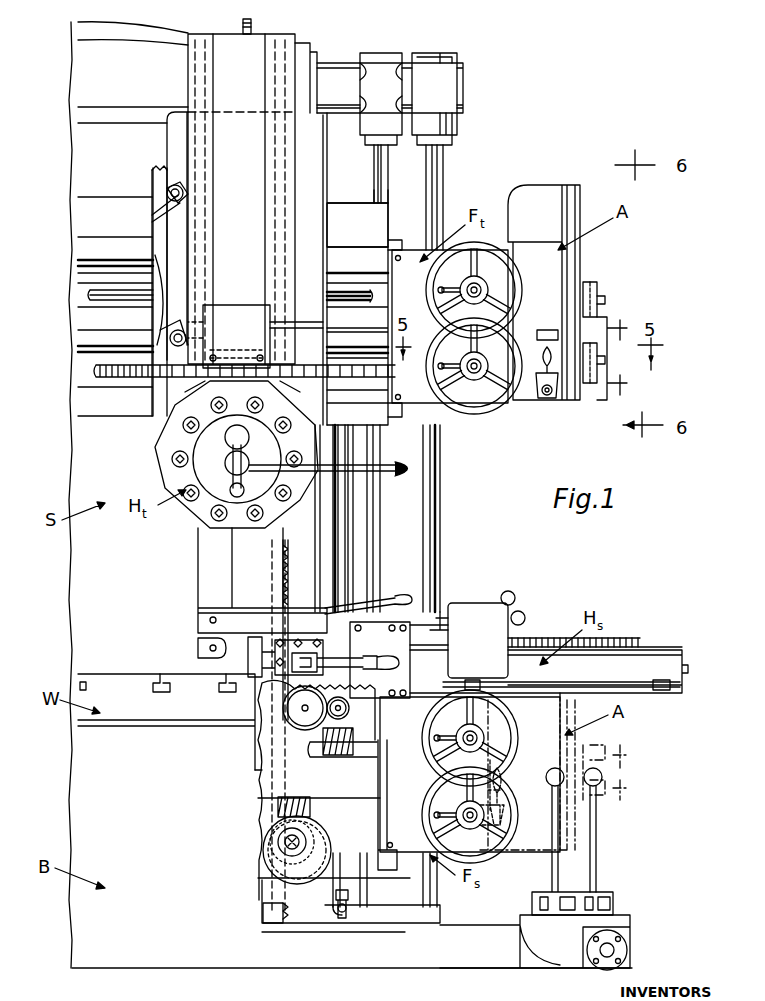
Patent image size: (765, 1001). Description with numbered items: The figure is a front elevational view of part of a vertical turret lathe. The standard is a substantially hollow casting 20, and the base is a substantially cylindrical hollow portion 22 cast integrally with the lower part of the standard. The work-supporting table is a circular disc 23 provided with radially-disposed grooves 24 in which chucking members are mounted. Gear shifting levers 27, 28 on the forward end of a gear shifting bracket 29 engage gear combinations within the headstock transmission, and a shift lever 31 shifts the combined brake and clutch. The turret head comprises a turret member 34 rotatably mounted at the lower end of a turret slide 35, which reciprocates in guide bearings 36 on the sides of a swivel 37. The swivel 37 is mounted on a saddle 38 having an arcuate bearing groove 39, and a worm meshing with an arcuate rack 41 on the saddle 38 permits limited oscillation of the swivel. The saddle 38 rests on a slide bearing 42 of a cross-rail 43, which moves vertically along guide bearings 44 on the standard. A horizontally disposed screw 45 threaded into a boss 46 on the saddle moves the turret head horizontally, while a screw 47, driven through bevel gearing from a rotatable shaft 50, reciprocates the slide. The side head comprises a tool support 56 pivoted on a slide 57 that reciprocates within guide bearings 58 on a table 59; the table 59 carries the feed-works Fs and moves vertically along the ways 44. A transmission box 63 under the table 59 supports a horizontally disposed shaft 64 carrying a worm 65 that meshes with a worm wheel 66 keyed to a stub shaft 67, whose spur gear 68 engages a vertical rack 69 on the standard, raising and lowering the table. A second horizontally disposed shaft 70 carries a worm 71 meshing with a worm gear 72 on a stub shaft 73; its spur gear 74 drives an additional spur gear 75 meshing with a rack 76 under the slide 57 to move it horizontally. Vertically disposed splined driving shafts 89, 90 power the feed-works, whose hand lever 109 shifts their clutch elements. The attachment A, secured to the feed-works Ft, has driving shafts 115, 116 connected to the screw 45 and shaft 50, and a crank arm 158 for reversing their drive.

The hollow casting 20 is at (82, 580).
The cylindrical hollow portion 22 is at (82, 806).
The circular disc 23 is at (78, 722).
The radially-disposed grooves 24 is at (222, 692).
The gear shifting lever 27 is at (602, 772).
The gear shifting lever 28 is at (546, 772).
The gear shifting bracket 29 is at (478, 926).
The shift lever 31 is at (345, 914).
The turret member 34 is at (185, 507).
The turret slide 35 is at (275, 290).
The guide bearings 36 is at (278, 250).
The swivel 37 is at (320, 165).
The saddle 38 is at (153, 190).
The arcuate bearing groove 39 is at (155, 205).
The arcuate rack 41 is at (160, 168).
The slide bearing 42 is at (378, 230).
The cross-rail 43 is at (376, 203).
The guide bearings 44 is at (240, 575).
The horizontally disposed screw 45 is at (100, 372).
The boss 46 is at (231, 356).
The screw 47 is at (250, 27).
The rotatable shaft 50 is at (92, 292).
The tool support 56 is at (282, 640).
The slide 57 is at (640, 650).
The guide bearings 58 is at (440, 613).
The table 59 is at (411, 598).
The transmission box 63 is at (387, 858).
The horizontally disposed shaft 64 is at (350, 806).
The worm 65 is at (300, 800).
The worm wheel 66 is at (265, 848).
The stub shaft 67 is at (297, 866).
The spur gear 68 is at (305, 839).
The rack 69 is at (289, 568).
The horizontally disposed shaft 70 is at (376, 750).
The worm 71 is at (341, 755).
The worm gear 72 is at (351, 704).
The stub shaft 73 is at (345, 712).
The spur gear 74 is at (366, 700).
The spur gear 75 is at (285, 706).
The rack 76 is at (343, 664).
The driving shaft 89 is at (375, 155).
The driving shaft 90 is at (440, 173).
The hand lever 109 is at (440, 293).
The driving shaft 115 is at (601, 361).
The driving shaft 116 is at (601, 300).
The crank arm 158 is at (538, 352).